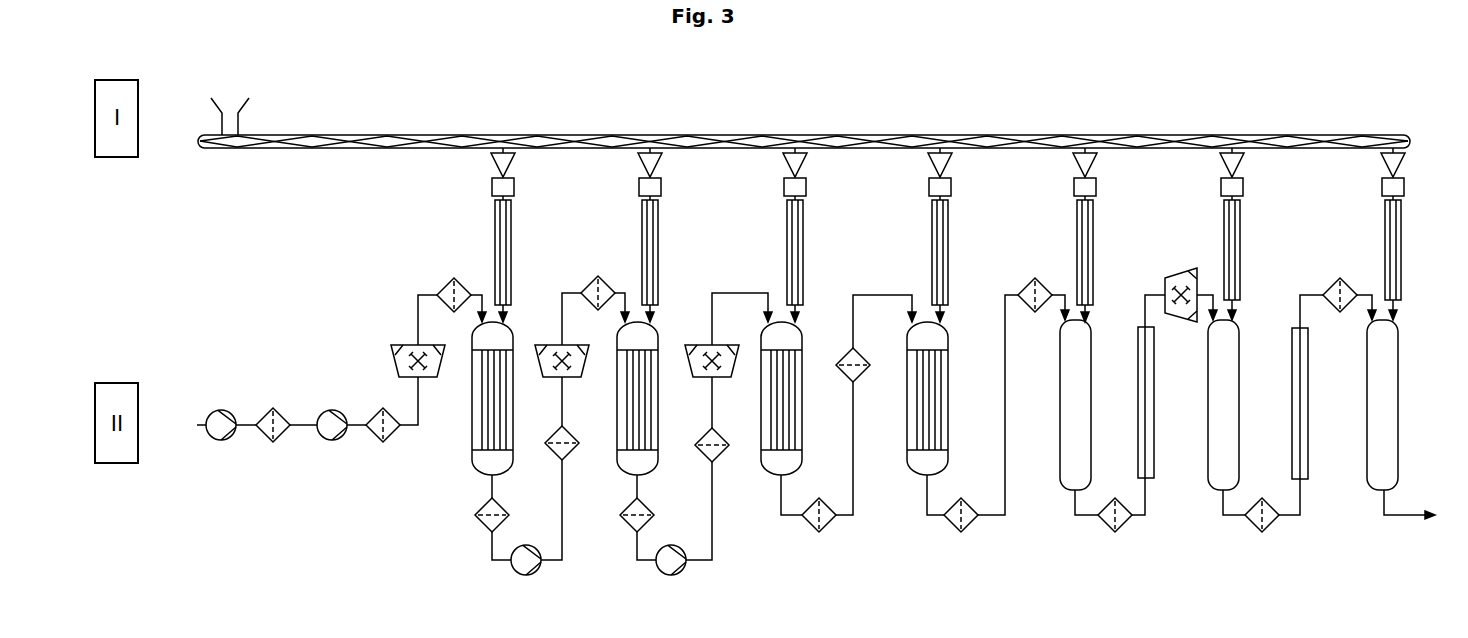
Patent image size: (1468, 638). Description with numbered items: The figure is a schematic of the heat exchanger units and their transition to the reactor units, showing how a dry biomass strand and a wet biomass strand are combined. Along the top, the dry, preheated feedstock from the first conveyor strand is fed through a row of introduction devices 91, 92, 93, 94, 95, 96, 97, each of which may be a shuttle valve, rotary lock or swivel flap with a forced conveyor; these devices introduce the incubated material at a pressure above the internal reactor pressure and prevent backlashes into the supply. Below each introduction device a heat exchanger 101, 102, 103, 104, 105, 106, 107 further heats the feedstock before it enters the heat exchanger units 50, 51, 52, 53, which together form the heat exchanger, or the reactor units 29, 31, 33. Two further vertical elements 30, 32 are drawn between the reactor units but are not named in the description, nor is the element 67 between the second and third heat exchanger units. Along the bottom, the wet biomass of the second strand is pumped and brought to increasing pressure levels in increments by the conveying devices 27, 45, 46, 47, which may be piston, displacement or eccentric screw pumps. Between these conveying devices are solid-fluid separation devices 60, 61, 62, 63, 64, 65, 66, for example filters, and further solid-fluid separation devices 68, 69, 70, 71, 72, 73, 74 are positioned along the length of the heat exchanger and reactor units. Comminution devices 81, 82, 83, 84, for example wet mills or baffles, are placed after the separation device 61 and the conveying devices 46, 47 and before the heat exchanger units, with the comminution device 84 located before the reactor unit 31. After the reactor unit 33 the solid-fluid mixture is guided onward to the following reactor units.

The conveying device 27 is at (221, 440).
The solid-fluid separation device 60 is at (273, 442).
The conveying device 45 is at (332, 440).
The solid-fluid separation device 61 is at (383, 442).
The comminution device 81 is at (423, 379).
The comminution device 82 is at (567, 379).
The comminution device 83 is at (717, 379).
The comminution device 84 is at (1177, 276).
The solid-fluid separation device 62 is at (452, 278).
The solid-fluid separation device 65 is at (596, 277).
The solid-fluid separation device 71 is at (1031, 279).
The solid-fluid separation device 74 is at (1338, 277).
The solid-fluid separation device 69 is at (847, 380).
The solid-fluid separation device 64 is at (553, 462).
The valve 67 is at (702, 462).
The solid-fluid separation device 63 is at (481, 530).
The solid-fluid separation device 66 is at (626, 532).
The solid-fluid separation device 68 is at (814, 530).
The solid-fluid separation device 70 is at (956, 530).
The solid-fluid separation device 72 is at (1109, 529).
The solid-fluid separation device 73 is at (1256, 530).
The conveying device 46 is at (516, 572).
The conveying device 47 is at (663, 572).
The heat exchanger unit 50 is at (477, 473).
The heat exchanger unit 51 is at (619, 473).
The heat exchanger unit 52 is at (766, 473).
The heat exchanger unit 53 is at (910, 473).
The reactor unit 29 is at (1059, 468).
The reactor unit 31 is at (1208, 468).
The reactor unit 33 is at (1367, 468).
The heat exchanger 30 is at (1137, 377).
The heat exchanger 32 is at (1290, 380).
The introduction device 91 is at (513, 180).
The introduction device 92 is at (660, 180).
The introduction device 93 is at (805, 180).
The introduction device 94 is at (950, 180).
The introduction device 95 is at (1095, 180).
The introduction device 96 is at (1242, 180).
The introduction device 97 is at (1403, 180).
The heat exchanger 101 is at (495, 238).
The heat exchanger 102 is at (642, 238).
The heat exchanger 103 is at (787, 238).
The heat exchanger 104 is at (932, 238).
The heat exchanger 105 is at (1077, 238).
The heat exchanger 106 is at (1224, 238).
The heat exchanger 107 is at (1385, 238).